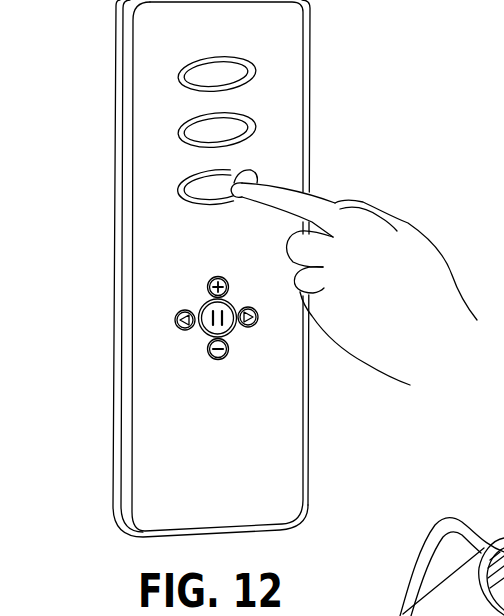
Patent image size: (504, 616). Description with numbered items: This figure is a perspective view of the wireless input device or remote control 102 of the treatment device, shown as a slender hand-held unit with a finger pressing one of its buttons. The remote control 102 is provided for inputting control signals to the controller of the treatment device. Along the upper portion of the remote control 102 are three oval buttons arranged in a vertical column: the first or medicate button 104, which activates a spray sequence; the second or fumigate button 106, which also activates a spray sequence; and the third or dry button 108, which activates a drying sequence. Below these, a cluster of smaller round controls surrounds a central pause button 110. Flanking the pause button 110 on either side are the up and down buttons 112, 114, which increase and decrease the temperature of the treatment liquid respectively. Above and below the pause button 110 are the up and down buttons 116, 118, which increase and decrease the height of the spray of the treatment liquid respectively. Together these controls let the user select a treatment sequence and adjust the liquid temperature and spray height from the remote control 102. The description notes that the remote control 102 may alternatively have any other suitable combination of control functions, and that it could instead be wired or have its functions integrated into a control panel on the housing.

The remote control 102 is at (110, 162).
The medicate button 104 is at (240, 73).
The fumigate button 106 is at (240, 128).
The dry button 108 is at (230, 174).
The pause button 110 is at (207, 332).
The up button 112 is at (256, 322).
The down button 114 is at (175, 320).
The up button 116 is at (218, 276).
The down button 118 is at (218, 360).